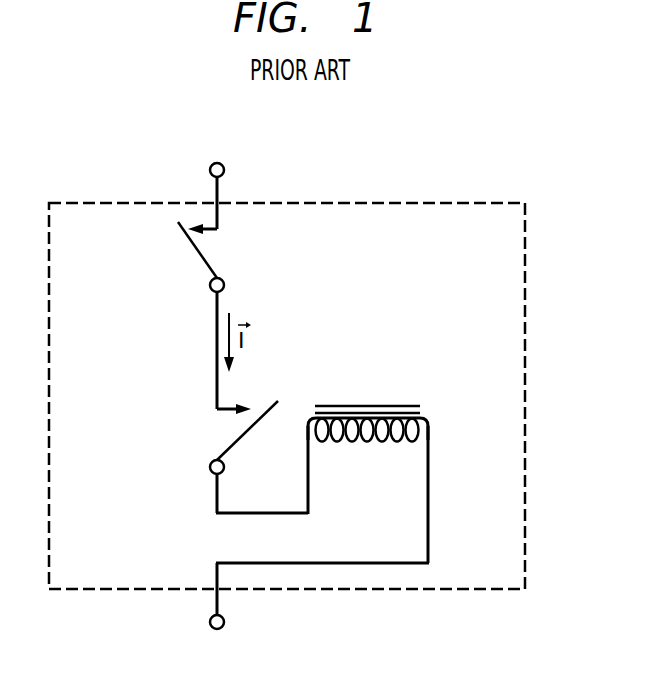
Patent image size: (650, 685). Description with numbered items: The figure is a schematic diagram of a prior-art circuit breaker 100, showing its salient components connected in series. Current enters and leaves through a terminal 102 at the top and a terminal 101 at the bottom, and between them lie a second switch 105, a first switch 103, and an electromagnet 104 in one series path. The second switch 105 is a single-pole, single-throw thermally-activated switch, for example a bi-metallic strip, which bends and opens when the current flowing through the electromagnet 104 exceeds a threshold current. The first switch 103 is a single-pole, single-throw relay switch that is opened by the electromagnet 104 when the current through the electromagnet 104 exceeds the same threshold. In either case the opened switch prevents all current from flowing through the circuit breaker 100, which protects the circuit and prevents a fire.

The circuit breaker 100 is at (462, 203).
The terminal 101 is at (210, 628).
The terminal 102 is at (225, 171).
The first switch 103 is at (240, 437).
The electromagnet 104 is at (400, 405).
The second switch 105 is at (200, 257).